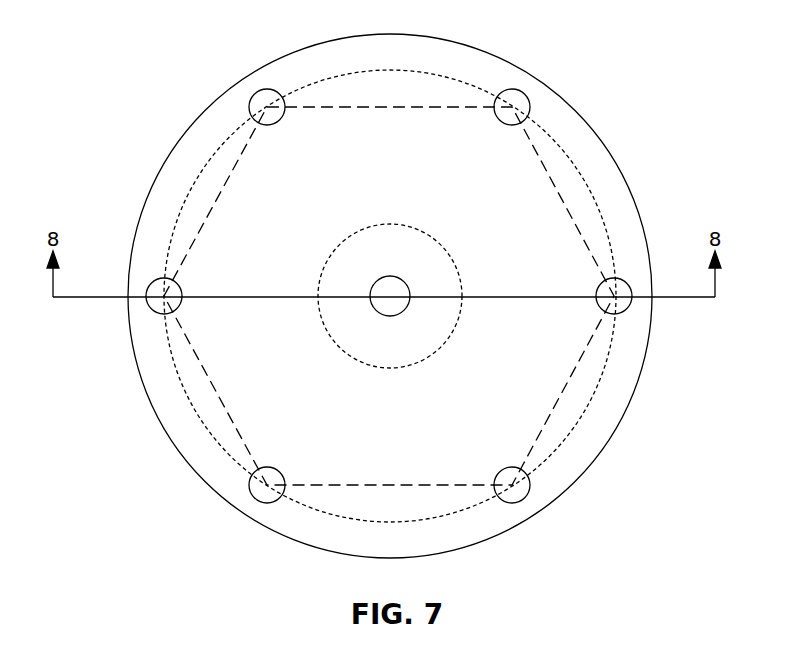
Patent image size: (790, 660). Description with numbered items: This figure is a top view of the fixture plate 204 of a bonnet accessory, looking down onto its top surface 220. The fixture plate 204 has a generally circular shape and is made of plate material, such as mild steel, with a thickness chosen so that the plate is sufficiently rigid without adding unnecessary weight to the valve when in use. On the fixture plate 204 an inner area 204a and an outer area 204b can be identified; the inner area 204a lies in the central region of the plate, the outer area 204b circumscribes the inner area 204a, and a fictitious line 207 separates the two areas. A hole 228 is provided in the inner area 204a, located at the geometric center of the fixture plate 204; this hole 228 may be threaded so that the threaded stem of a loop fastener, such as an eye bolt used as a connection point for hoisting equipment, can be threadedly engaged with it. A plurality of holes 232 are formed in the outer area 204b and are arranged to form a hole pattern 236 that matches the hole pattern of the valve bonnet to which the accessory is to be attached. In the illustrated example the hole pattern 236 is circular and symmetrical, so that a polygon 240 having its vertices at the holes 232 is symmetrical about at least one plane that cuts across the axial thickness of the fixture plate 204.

The fixture plate 204 is at (612, 157).
The inner area 204a is at (374, 345).
The outer area 204b is at (310, 432).
The fictitious line 207 is at (460, 325).
The top surface 220 is at (212, 465).
The hole 228 is at (393, 283).
The holes 232 is at (515, 95).
The hole pattern 236 is at (423, 72).
The polygon 240 is at (348, 108).